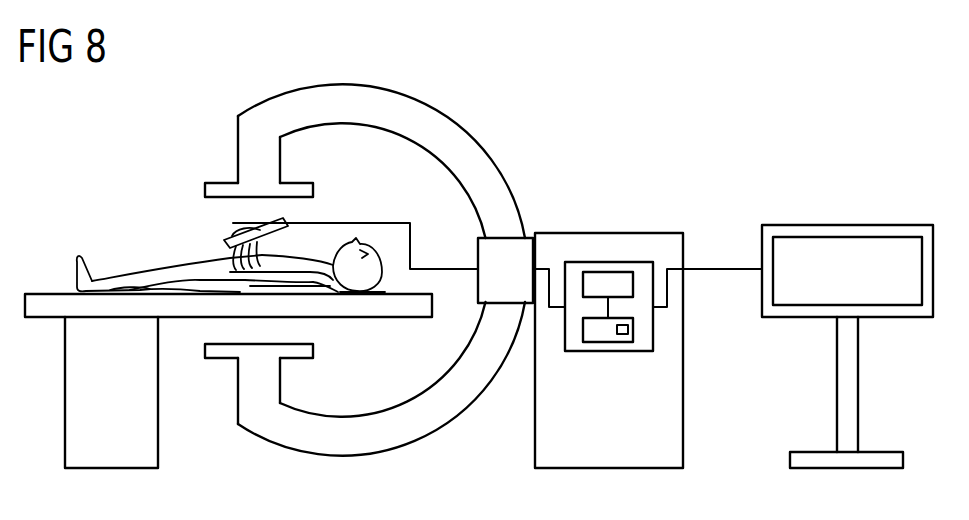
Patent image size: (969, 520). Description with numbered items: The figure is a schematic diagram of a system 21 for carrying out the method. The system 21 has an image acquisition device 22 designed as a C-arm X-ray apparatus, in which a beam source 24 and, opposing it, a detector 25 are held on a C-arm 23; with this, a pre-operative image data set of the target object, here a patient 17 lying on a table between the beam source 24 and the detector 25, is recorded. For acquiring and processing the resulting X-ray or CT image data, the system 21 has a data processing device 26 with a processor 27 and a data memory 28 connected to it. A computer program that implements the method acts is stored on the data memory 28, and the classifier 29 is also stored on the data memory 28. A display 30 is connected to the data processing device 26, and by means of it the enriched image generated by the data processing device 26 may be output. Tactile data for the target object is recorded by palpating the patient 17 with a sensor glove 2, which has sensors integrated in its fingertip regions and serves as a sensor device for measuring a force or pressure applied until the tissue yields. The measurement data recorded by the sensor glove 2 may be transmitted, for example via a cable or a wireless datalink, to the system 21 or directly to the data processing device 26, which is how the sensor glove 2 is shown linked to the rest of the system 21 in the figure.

The sensor glove 2 is at (227, 232).
The patient 17 is at (127, 283).
The system 21 is at (660, 233).
The image acquisition device 22 is at (472, 148).
The C-arm 23 is at (381, 379).
The beam source 24 is at (220, 353).
The detector 25 is at (217, 188).
The data processing device 26 is at (573, 262).
The processor 27 is at (615, 272).
The data memory 28 is at (595, 342).
The classifier 29 is at (625, 334).
The display 30 is at (847, 225).